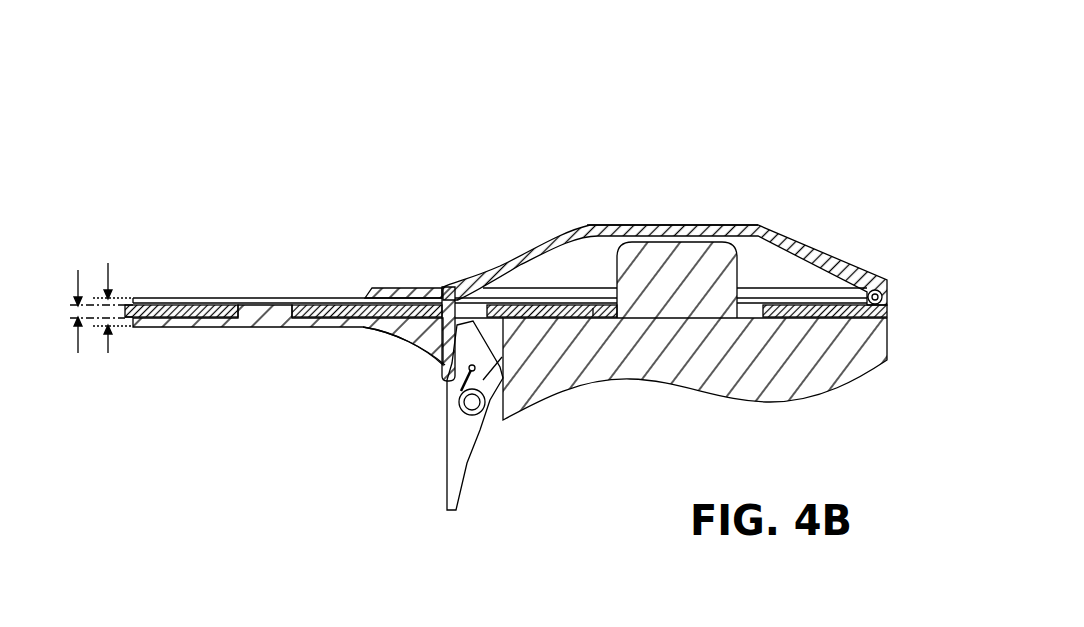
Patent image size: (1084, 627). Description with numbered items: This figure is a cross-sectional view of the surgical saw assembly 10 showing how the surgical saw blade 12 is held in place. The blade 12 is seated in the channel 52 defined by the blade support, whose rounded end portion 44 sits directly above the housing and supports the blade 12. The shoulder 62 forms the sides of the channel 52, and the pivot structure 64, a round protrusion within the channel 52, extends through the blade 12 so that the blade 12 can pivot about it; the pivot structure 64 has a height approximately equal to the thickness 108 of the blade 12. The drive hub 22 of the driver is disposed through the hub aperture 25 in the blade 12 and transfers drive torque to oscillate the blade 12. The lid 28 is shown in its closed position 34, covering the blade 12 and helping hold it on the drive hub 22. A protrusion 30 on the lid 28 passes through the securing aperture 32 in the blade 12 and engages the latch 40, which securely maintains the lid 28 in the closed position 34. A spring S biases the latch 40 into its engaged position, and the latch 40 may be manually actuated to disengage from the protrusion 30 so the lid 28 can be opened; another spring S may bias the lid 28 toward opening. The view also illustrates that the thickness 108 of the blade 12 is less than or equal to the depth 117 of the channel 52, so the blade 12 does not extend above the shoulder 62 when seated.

The surgical saw assembly 10 is at (393, 210).
The surgical saw blade 12 is at (170, 294).
The drive hub 22 is at (681, 250).
The hub aperture 25 is at (603, 313).
The lid 28 is at (605, 226).
The protrusion 30 is at (445, 366).
The securing aperture 32 is at (442, 287).
The closed position 34 is at (768, 200).
The latch 40 is at (440, 505).
The rounded end portion 44 is at (833, 357).
The channel 52 is at (208, 298).
The shoulder 62 is at (238, 305).
The pivot structure 64 is at (268, 313).
The thickness 108 is at (78, 272).
The depth 117 is at (108, 353).
The spring S is at (887, 297).